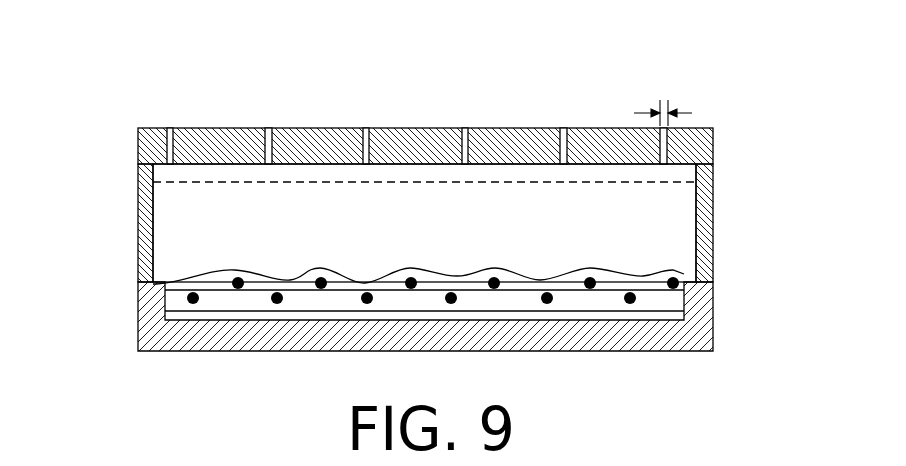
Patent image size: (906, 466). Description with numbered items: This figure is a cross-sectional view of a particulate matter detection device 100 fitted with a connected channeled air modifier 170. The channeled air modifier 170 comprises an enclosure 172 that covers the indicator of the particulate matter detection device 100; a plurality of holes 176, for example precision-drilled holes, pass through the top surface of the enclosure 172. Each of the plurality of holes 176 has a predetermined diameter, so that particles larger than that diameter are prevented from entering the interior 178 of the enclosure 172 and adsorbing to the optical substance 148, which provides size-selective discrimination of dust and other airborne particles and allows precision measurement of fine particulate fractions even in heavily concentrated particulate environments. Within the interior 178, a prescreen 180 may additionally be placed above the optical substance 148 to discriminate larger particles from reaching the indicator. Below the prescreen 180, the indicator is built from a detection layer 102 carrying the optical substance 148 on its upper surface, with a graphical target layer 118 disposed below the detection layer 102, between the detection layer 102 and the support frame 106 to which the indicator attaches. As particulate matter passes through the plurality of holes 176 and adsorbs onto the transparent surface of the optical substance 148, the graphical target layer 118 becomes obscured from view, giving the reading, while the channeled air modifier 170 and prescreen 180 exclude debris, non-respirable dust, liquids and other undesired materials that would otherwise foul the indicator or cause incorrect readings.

The particulate matter detection device 100 is at (104, 305).
The detection layer 102 is at (635, 292).
The support frame 106 is at (713, 290).
The graphical target layer 118 is at (215, 311).
The optical substance 148 is at (645, 276).
The channeled air modifier 170 is at (138, 200).
The enclosure 172 is at (713, 140).
The plurality of holes 176 is at (662, 148).
The interior 178 is at (259, 222).
The prescreen 180 is at (646, 184).